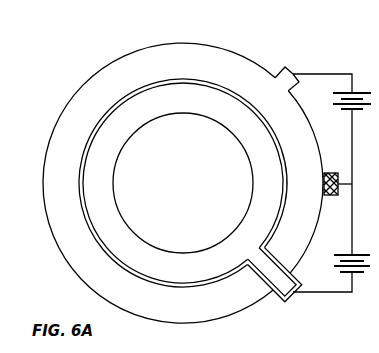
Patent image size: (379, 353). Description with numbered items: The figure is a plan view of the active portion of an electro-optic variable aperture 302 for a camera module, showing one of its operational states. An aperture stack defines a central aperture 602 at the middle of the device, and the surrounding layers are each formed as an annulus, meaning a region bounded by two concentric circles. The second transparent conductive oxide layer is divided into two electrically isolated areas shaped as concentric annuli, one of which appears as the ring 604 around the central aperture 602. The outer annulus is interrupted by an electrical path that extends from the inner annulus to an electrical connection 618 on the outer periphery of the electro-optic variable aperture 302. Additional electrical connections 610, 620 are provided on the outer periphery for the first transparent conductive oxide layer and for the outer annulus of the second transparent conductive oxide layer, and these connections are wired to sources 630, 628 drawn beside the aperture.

The electro-optic variable aperture 302 is at (62, 254).
The central aperture 602 is at (134, 133).
The annular electrode ring 604 is at (93, 133).
The electrical connection 618 is at (283, 301).
The electrical connection 620 is at (280, 67).
The electrical connection 610 is at (332, 197).
The first battery 630 is at (362, 86).
The second battery 628 is at (360, 280).